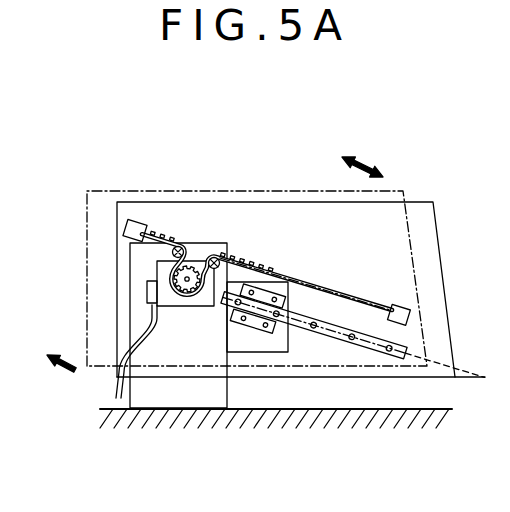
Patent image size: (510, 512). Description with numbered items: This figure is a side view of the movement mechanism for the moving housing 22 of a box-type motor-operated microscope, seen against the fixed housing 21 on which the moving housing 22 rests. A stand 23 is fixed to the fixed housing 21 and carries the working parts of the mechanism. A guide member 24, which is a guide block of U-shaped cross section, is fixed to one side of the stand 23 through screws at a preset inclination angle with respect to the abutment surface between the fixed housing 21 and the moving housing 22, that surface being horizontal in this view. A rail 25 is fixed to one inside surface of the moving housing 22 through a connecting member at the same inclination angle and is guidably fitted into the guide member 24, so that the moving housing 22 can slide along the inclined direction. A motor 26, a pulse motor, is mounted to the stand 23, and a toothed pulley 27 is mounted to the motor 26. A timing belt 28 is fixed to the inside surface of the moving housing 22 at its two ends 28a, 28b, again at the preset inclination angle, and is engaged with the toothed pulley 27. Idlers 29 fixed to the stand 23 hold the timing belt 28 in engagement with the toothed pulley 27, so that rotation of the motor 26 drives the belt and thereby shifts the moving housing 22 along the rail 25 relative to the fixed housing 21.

The fixed housing 21 is at (110, 406).
The moving housing 22 is at (222, 201).
The stand 23 is at (161, 350).
The guide member 24 is at (248, 322).
The rail 25 is at (378, 353).
The motor 26 is at (160, 269).
The toothed pulley 27 is at (182, 283).
The timing belt 28 is at (320, 283).
The end of timing belt 28a is at (147, 223).
The end of timing belt 28b is at (394, 304).
The idlers 29 is at (172, 252).